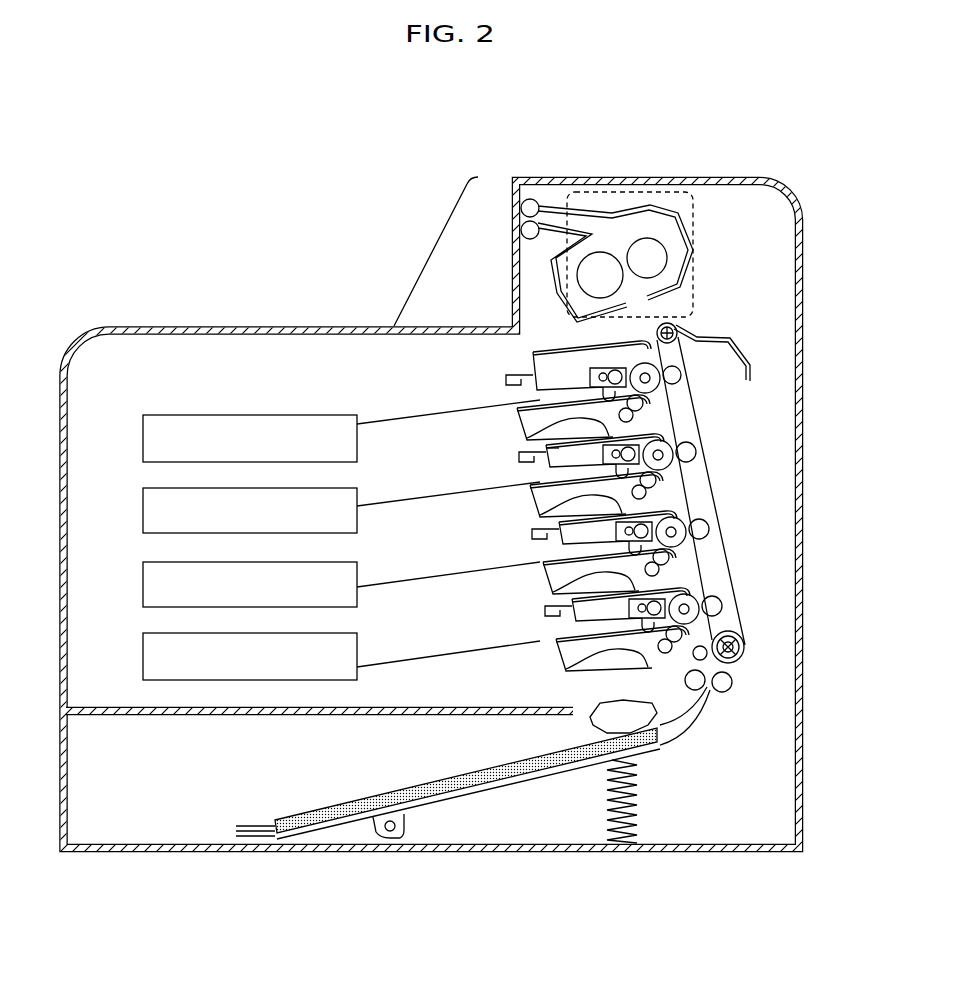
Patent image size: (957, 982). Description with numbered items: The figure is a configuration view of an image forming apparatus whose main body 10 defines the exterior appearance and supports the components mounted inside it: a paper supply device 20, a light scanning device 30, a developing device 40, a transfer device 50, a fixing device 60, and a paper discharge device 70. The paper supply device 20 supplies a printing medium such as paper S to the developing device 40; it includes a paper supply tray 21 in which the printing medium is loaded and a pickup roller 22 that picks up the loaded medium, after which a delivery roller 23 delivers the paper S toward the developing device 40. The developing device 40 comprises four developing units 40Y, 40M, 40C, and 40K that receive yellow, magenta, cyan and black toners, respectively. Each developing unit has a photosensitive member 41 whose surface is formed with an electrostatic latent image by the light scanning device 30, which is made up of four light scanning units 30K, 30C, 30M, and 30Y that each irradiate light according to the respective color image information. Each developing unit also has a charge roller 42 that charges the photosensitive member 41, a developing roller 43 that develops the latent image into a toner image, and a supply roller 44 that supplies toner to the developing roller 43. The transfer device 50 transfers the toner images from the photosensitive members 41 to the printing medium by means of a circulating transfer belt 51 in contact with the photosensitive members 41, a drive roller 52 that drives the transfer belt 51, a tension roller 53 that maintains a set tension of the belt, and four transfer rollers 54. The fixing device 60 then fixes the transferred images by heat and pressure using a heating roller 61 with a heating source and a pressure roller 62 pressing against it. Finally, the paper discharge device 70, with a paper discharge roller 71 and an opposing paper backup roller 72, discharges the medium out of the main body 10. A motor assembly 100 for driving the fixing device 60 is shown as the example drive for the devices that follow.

The main body 10 is at (232, 322).
The paper supply device 20 is at (458, 822).
The paper supply tray 21 is at (553, 776).
The pickup roller 22 is at (598, 722).
The delivery roller 23 is at (698, 690).
The light scanning device 30 is at (137, 410).
The light scanning unit 30K is at (143, 438).
The light scanning unit 30C is at (143, 510).
The light scanning unit 30M is at (143, 584).
The light scanning unit 30Y is at (143, 656).
The developing device 40 is at (516, 352).
The developing unit 40K is at (587, 401).
The developing unit 40C is at (517, 496).
The developing unit 40M is at (532, 576).
The developing unit 40Y is at (545, 654).
The photosensitive member 41 is at (686, 388).
The charge roller 42 is at (498, 386).
The developing roller 43 is at (687, 421).
The supply roller 44 is at (521, 449).
The transfer device 50 is at (762, 436).
The transfer belt 51 is at (708, 466).
The drive roller 52 is at (678, 326).
The tension roller 53 is at (741, 663).
The transfer roller 54 is at (681, 372).
The fixing device 60 is at (709, 239).
The heating roller 61 is at (605, 252).
The pressure roller 62 is at (650, 238).
The paper discharge device 70 is at (548, 192).
The paper discharge roller 71 is at (522, 231).
The paper backup roller 72 is at (522, 206).
The motor assembly 100 is at (695, 205).
The paper S is at (297, 818).